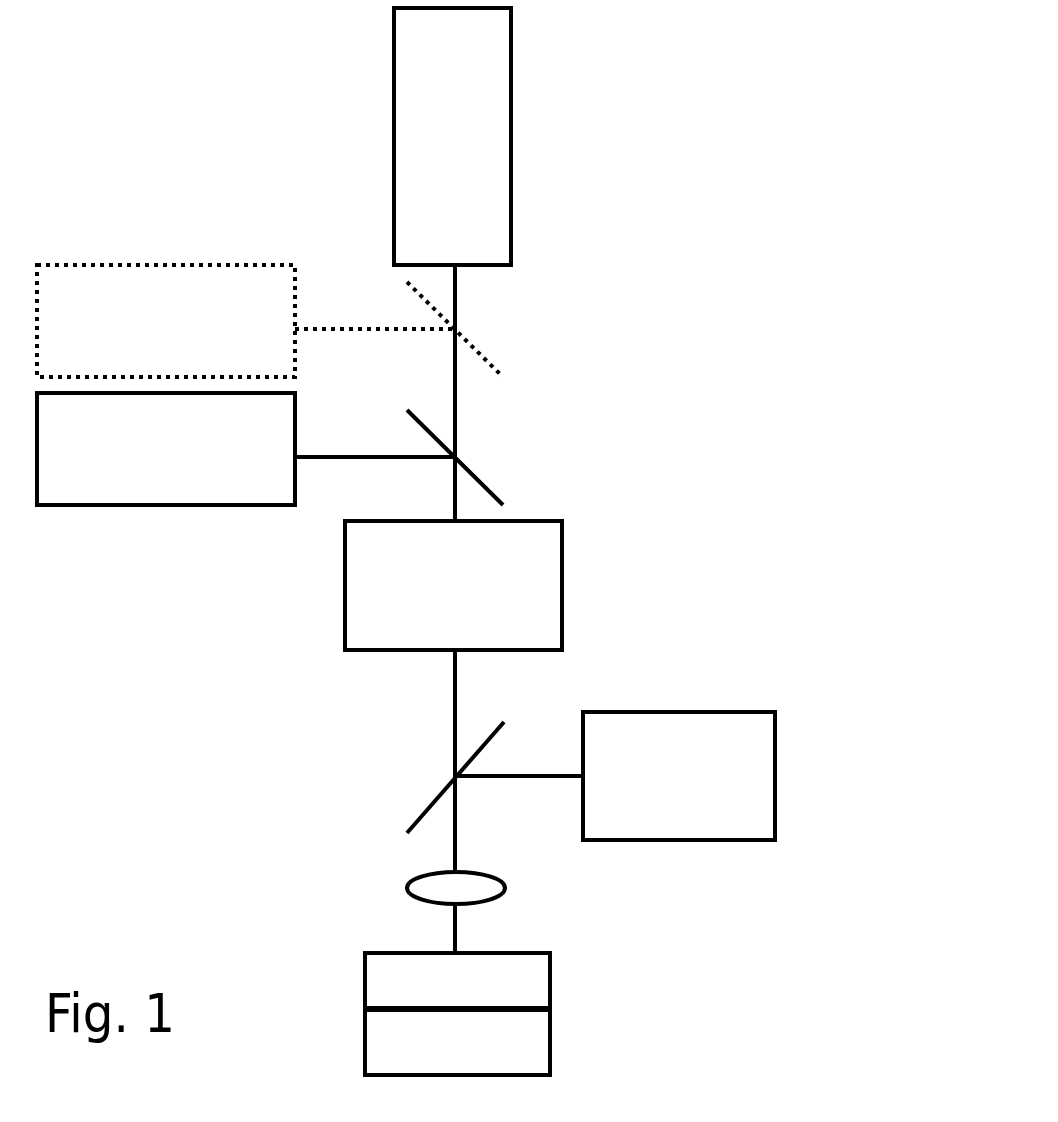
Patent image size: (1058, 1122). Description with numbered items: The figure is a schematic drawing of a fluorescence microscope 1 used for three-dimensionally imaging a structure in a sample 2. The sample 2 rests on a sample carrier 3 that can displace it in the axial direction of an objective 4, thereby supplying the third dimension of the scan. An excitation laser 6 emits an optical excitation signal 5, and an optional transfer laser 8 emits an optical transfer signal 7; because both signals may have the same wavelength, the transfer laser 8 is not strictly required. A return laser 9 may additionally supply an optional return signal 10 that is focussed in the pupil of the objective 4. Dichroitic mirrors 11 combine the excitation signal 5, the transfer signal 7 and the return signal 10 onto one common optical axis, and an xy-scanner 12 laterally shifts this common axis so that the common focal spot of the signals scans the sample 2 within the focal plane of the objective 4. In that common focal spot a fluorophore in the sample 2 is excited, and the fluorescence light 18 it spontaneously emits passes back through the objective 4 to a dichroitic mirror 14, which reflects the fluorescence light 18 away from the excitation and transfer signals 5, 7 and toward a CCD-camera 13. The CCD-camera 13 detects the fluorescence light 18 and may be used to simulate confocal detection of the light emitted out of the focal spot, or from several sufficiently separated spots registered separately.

The fluorescence microscope 1 is at (633, 225).
The sample 2 is at (520, 970).
The sample carrier 3 is at (520, 1045).
The objective 4 is at (410, 888).
The optical excitation signal 5 is at (457, 297).
The excitation laser 6 is at (487, 153).
The optical transfer signal 7 is at (335, 463).
The transfer laser 8 is at (165, 480).
The return laser 9 is at (181, 314).
The return signal 10 is at (372, 325).
The dichroitic mirrors 11 is at (477, 470).
The xy-scanner 12 is at (535, 603).
The CCD-camera 13 is at (755, 767).
The dichroitic mirror 14 is at (441, 790).
The fluorescence light 18 is at (523, 775).